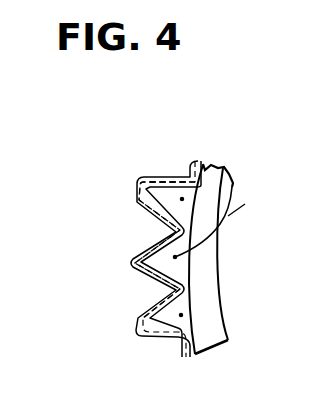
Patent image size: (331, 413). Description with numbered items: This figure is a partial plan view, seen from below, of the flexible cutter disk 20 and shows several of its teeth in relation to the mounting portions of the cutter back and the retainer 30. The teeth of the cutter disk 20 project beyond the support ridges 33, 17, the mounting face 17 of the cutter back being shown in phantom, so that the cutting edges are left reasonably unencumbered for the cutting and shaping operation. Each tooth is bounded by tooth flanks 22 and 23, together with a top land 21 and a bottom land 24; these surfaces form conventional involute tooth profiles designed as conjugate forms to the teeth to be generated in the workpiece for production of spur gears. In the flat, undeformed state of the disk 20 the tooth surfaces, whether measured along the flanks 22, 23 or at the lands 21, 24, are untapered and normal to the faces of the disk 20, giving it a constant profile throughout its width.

The mounting face 17 is at (164, 180).
The flexible cutter disk 20 is at (128, 326).
The top land 21 is at (128, 262).
The tooth flank 22 is at (152, 177).
The tooth flank 23 is at (142, 283).
The bottom land 24 is at (172, 228).
The retainer 30 is at (218, 176).
The support ridge 33 is at (182, 199).